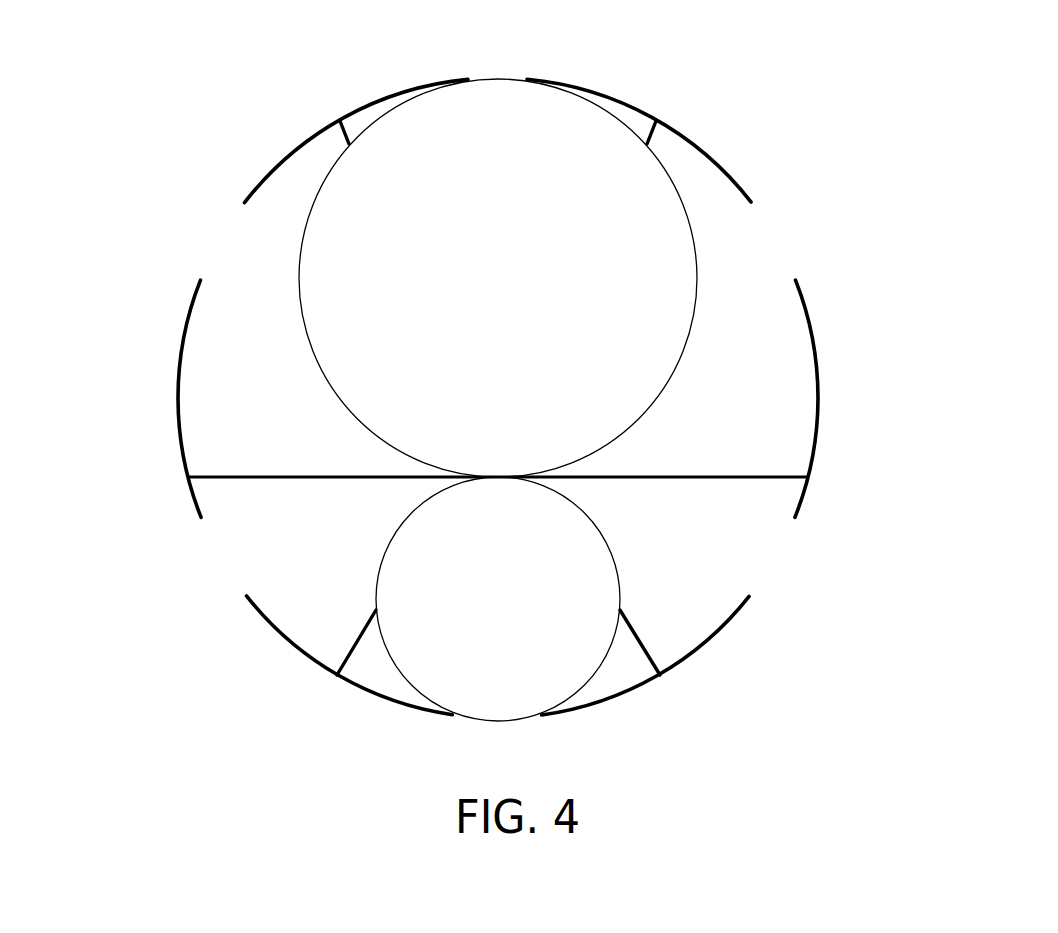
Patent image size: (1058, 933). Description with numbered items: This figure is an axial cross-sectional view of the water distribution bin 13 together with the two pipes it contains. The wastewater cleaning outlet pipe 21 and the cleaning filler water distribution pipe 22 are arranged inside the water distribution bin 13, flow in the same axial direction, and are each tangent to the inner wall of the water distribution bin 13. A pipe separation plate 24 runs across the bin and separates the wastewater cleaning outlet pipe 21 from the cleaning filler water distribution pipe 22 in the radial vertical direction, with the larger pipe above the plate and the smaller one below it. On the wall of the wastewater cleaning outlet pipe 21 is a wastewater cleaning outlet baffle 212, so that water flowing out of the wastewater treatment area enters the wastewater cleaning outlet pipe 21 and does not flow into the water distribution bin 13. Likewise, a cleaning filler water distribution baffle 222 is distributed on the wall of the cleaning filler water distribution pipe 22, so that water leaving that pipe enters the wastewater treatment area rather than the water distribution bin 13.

The water distribution bin 13 is at (285, 400).
The wastewater cleaning outlet pipe 21 is at (700, 263).
The cleaning filler water distribution pipe 22 is at (398, 678).
The pipe separation plate 24 is at (700, 477).
The wastewater cleaning outlet baffle 212 is at (344, 128).
The cleaning filler water distribution baffle 222 is at (350, 643).